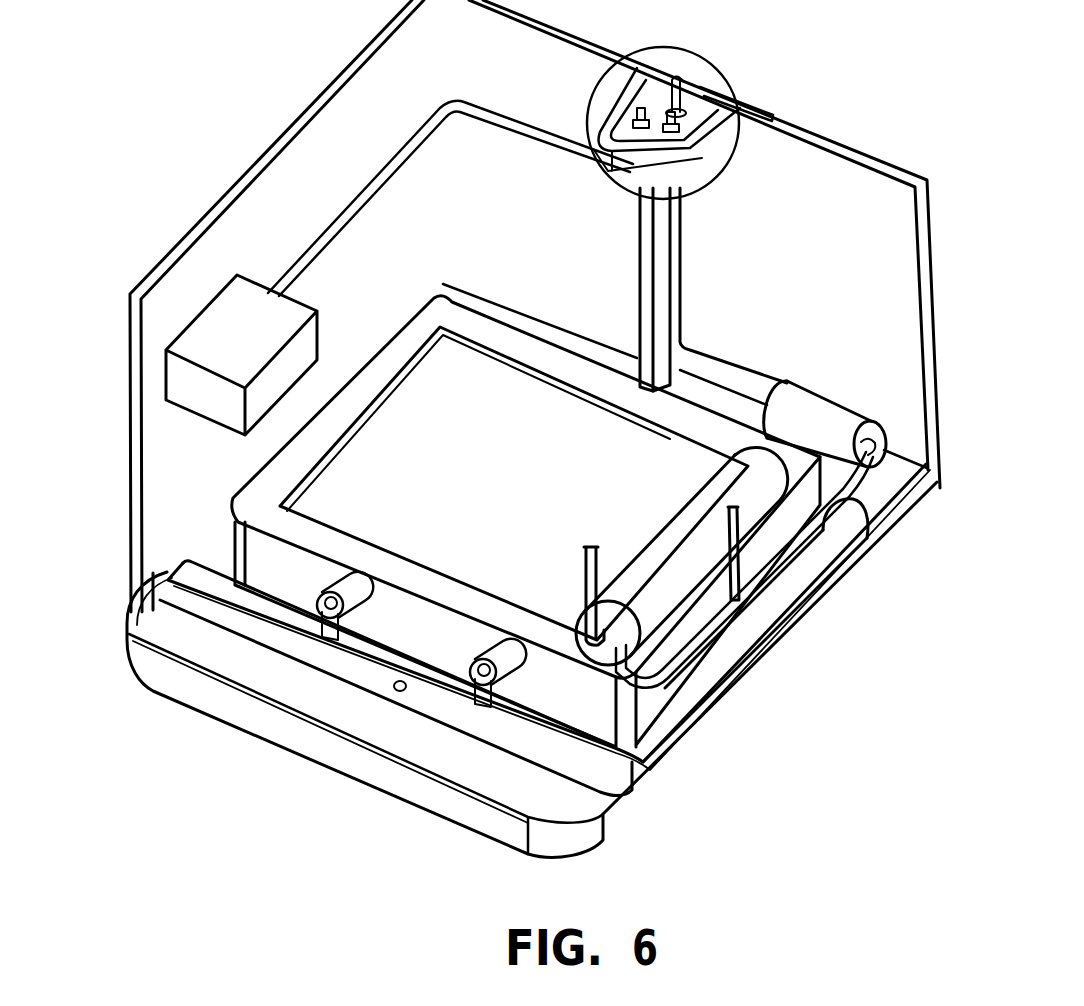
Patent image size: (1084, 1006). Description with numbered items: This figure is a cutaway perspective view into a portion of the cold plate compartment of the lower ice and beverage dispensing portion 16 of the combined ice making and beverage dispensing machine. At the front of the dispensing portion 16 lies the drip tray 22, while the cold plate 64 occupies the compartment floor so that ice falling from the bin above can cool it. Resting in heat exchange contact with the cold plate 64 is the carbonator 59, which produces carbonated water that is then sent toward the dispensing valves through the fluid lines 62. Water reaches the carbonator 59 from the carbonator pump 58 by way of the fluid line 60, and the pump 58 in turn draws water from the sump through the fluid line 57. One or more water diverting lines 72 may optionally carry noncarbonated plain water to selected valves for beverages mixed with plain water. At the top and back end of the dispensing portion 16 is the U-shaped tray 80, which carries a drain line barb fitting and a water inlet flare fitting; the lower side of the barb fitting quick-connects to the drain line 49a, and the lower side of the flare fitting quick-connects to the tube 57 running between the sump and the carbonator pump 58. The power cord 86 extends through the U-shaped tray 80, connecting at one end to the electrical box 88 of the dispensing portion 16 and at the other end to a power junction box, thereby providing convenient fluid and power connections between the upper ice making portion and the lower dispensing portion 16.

The lower ice and beverage dispensing portion 16 is at (240, 180).
The drip tray 22 is at (370, 772).
The drain line 49a is at (639, 249).
The fluid line 57 is at (681, 309).
The carbonator pump 58 is at (835, 413).
The carbonator 59 is at (718, 491).
The fluid line 60 is at (784, 548).
The fluid lines 62 is at (585, 570).
The cold plate 64 is at (695, 663).
The water diverting line 72 is at (729, 545).
The U-shaped tray 80 is at (673, 169).
The power cord 86 is at (373, 182).
The electrical box 88 is at (182, 381).